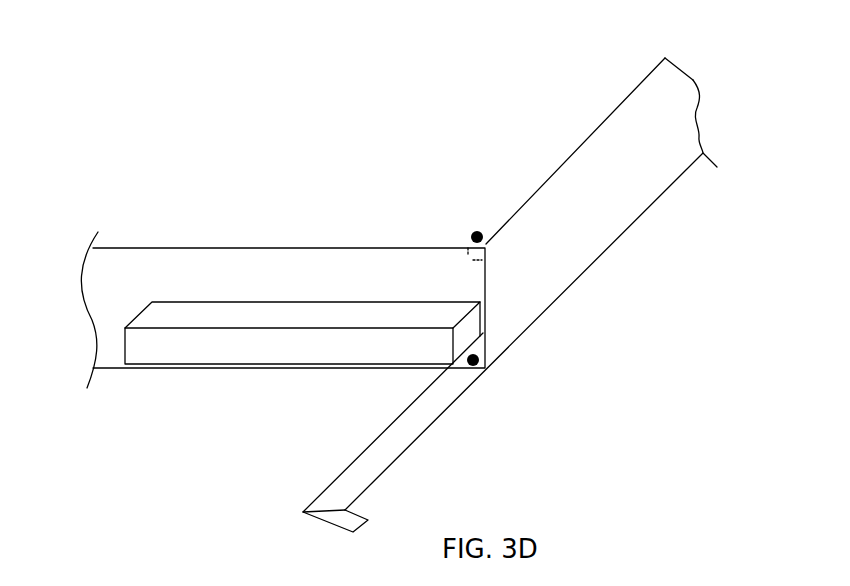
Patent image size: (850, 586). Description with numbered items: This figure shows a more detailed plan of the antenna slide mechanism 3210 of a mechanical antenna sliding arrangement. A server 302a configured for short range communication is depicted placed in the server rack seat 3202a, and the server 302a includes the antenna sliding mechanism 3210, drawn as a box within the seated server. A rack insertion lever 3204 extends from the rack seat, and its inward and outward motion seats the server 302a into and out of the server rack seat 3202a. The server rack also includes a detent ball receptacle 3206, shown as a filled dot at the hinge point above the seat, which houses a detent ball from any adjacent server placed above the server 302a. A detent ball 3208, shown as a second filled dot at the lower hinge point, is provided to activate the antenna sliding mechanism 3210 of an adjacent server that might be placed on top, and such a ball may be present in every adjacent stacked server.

The server rack seat 3202a is at (695, 80).
The server 302a is at (573, 282).
The rack insertion lever 3204 is at (392, 465).
The detent ball receptacle 3206 is at (490, 237).
The detent ball 3208 is at (493, 360).
The antenna sliding mechanism 3210 is at (273, 298).